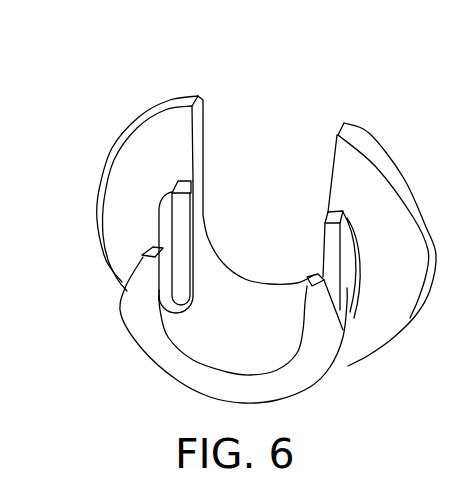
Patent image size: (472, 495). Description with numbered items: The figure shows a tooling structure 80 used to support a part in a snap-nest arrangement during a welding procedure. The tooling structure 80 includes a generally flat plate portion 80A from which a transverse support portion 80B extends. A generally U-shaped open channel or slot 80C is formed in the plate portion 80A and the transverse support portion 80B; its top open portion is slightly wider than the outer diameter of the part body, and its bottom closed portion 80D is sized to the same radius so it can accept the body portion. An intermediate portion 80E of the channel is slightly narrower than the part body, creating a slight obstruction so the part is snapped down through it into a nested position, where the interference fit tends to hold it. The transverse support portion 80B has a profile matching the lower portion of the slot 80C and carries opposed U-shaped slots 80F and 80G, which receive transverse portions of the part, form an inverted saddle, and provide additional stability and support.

The tooling structure 80 is at (78, 92).
The plate portion 80A is at (123, 177).
The transverse support portion 80B is at (163, 352).
The U-shaped open channel or slot 80C is at (269, 165).
The bottom closed portion 80D is at (237, 321).
The intermediate portion 80E is at (203, 215).
The U-shaped channel or slot 80F is at (163, 243).
The U-shaped channel or slot 80G is at (333, 285).